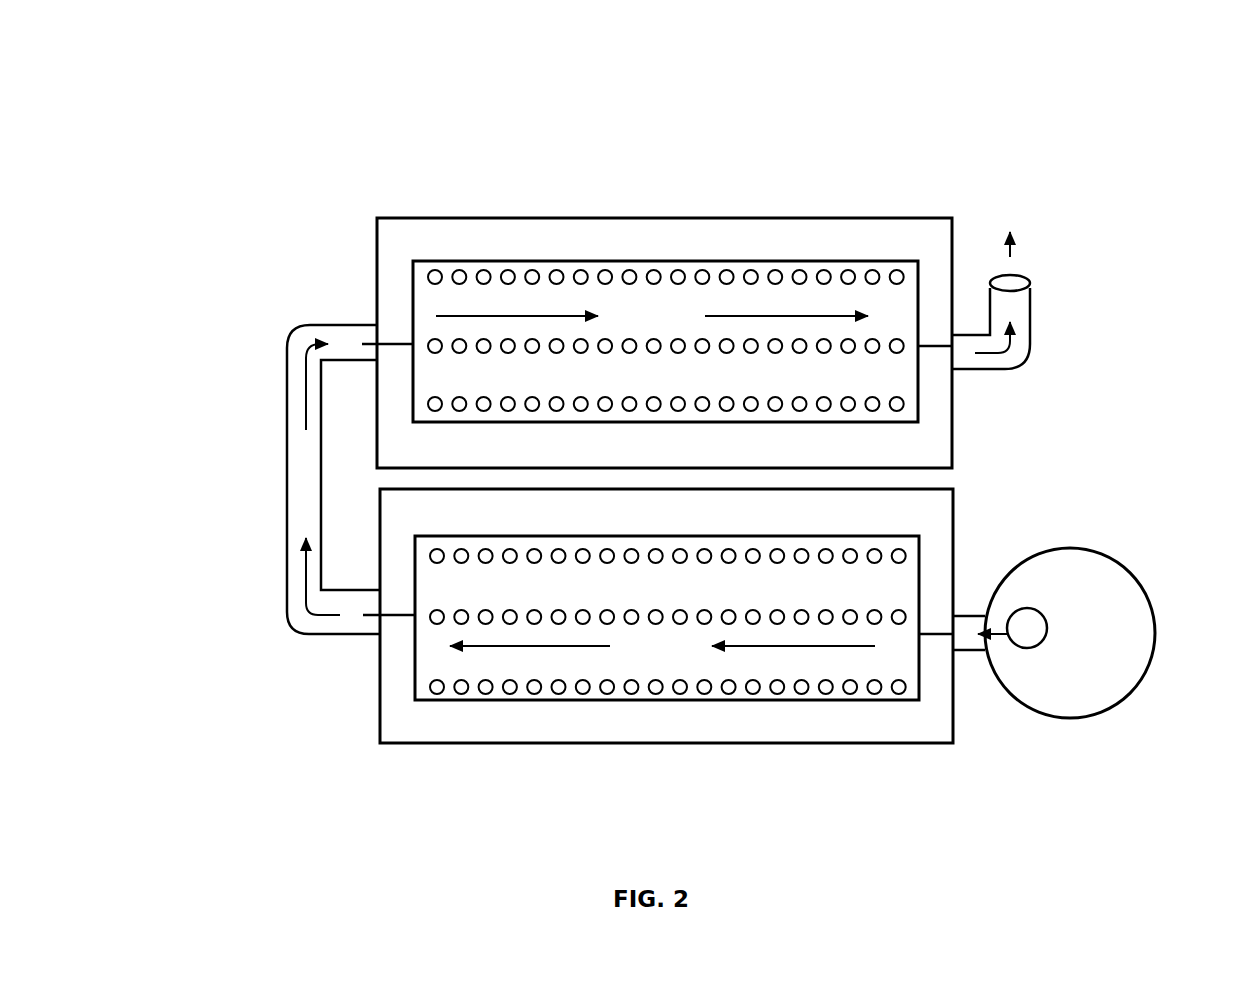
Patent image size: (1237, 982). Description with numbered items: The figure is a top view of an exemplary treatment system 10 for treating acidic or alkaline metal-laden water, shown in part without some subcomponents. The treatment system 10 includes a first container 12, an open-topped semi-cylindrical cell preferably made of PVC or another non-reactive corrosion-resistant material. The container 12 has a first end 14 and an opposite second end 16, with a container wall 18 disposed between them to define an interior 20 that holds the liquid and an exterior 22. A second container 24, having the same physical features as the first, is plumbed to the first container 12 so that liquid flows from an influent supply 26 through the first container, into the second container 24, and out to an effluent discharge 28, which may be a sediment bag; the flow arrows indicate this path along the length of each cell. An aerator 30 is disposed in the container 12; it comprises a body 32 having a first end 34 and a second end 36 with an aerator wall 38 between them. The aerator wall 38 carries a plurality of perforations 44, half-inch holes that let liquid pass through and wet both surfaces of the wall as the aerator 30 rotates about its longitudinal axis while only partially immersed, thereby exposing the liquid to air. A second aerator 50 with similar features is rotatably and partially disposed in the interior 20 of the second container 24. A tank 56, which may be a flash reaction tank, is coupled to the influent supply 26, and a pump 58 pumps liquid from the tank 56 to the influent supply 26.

The treatment system 10 is at (657, 136).
The container 12 is at (924, 775).
The first end 14 is at (955, 718).
The second end 16 is at (380, 689).
The container wall 18 is at (517, 743).
The interior 20 is at (919, 255).
The exterior 22 is at (1053, 516).
The second container 24 is at (848, 212).
The influent supply 26 is at (968, 613).
The effluent discharge 28 is at (1031, 278).
The aerator 30 is at (423, 702).
The body 32 is at (818, 708).
The first end 34 is at (922, 548).
The second end 36 is at (417, 552).
The aerator wall 38 is at (673, 601).
The perforations 44 is at (462, 690).
The second aerator 50 is at (460, 262).
The tank 56 is at (1128, 570).
The pump 58 is at (1032, 620).